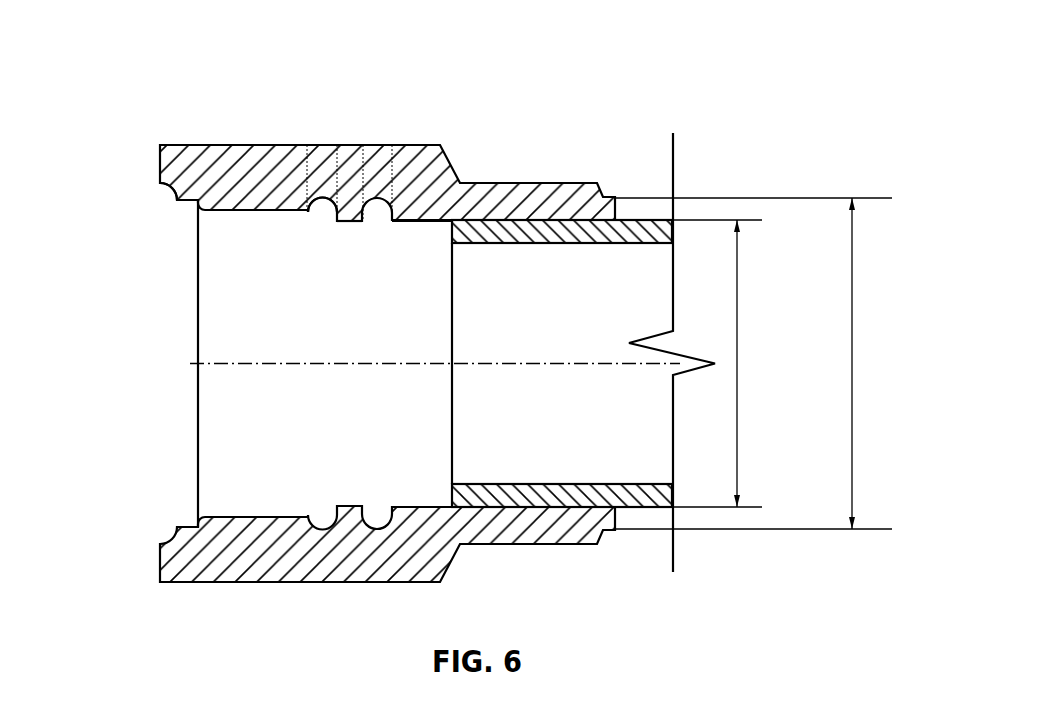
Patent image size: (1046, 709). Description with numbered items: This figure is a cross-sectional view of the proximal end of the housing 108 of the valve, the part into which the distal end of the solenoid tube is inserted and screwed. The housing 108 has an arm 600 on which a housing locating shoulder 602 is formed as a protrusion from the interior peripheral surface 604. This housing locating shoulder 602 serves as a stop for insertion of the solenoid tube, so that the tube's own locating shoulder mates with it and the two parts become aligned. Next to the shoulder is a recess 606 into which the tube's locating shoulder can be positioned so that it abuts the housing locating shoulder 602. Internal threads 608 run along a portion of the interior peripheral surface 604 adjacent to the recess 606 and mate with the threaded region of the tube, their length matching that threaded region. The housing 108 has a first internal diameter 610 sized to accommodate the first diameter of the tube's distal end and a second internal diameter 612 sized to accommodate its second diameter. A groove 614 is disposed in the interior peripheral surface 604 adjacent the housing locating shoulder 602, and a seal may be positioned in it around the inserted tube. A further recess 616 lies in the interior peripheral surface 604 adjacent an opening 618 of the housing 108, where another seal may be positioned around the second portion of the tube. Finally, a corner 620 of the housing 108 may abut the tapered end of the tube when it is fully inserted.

The housing 108 is at (498, 291).
The arm 600 is at (342, 145).
The housing locating shoulder 602 is at (333, 228).
The interior peripheral surface 604 is at (432, 228).
The recess 606 is at (322, 210).
The internal threads 608 is at (233, 215).
The first internal diameter 610 is at (738, 363).
The second internal diameter 612 is at (853, 363).
The groove 614 is at (388, 190).
The recess 616 is at (155, 185).
The opening 618 is at (148, 352).
The corner 620 is at (485, 183).